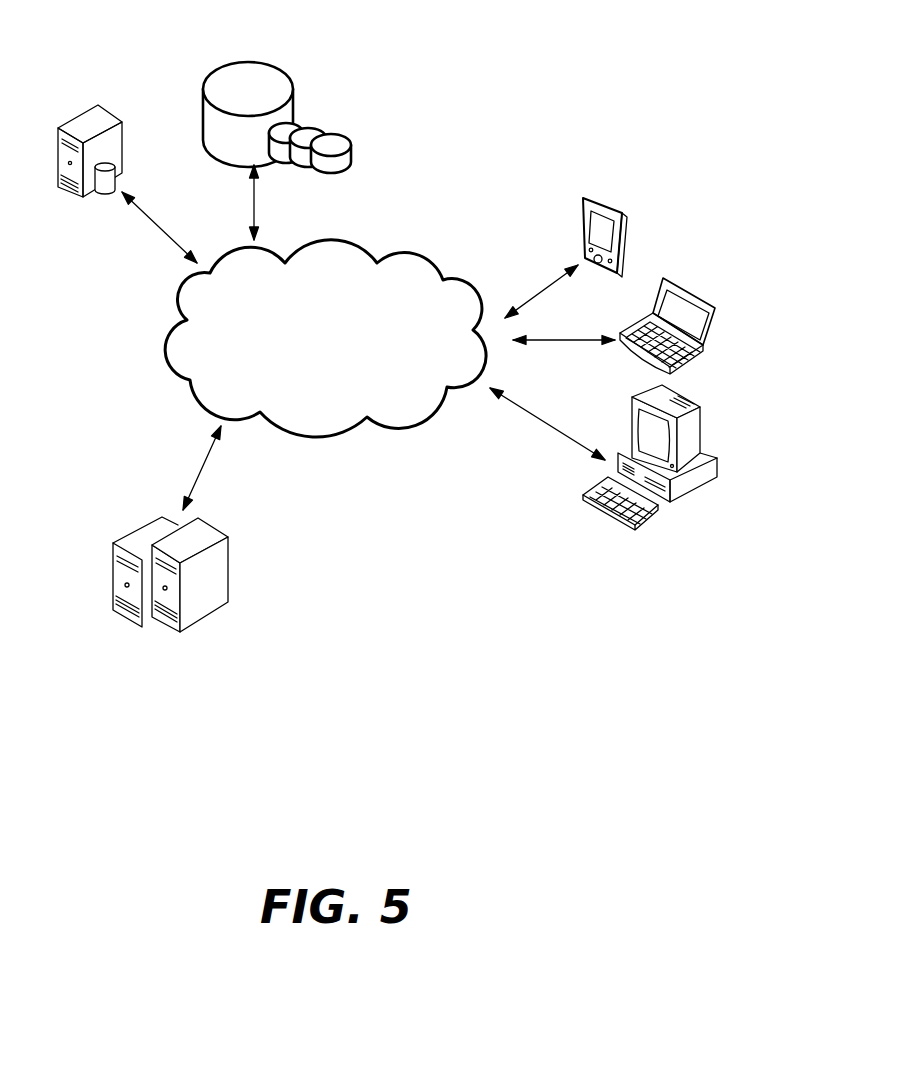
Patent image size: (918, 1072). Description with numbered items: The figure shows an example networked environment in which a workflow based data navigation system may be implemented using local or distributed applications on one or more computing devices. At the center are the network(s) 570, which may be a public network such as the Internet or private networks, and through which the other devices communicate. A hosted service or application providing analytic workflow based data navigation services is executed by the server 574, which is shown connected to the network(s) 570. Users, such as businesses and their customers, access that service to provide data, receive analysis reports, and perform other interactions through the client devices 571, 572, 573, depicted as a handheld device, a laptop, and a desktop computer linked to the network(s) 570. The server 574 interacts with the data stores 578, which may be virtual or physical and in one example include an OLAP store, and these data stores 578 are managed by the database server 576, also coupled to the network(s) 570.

The network(s) 570 is at (365, 232).
The client device 571 is at (628, 195).
The client device 572 is at (707, 275).
The client device 573 is at (677, 393).
The server 574 is at (155, 640).
The database server 576 is at (95, 205).
The data stores 578 is at (263, 37).